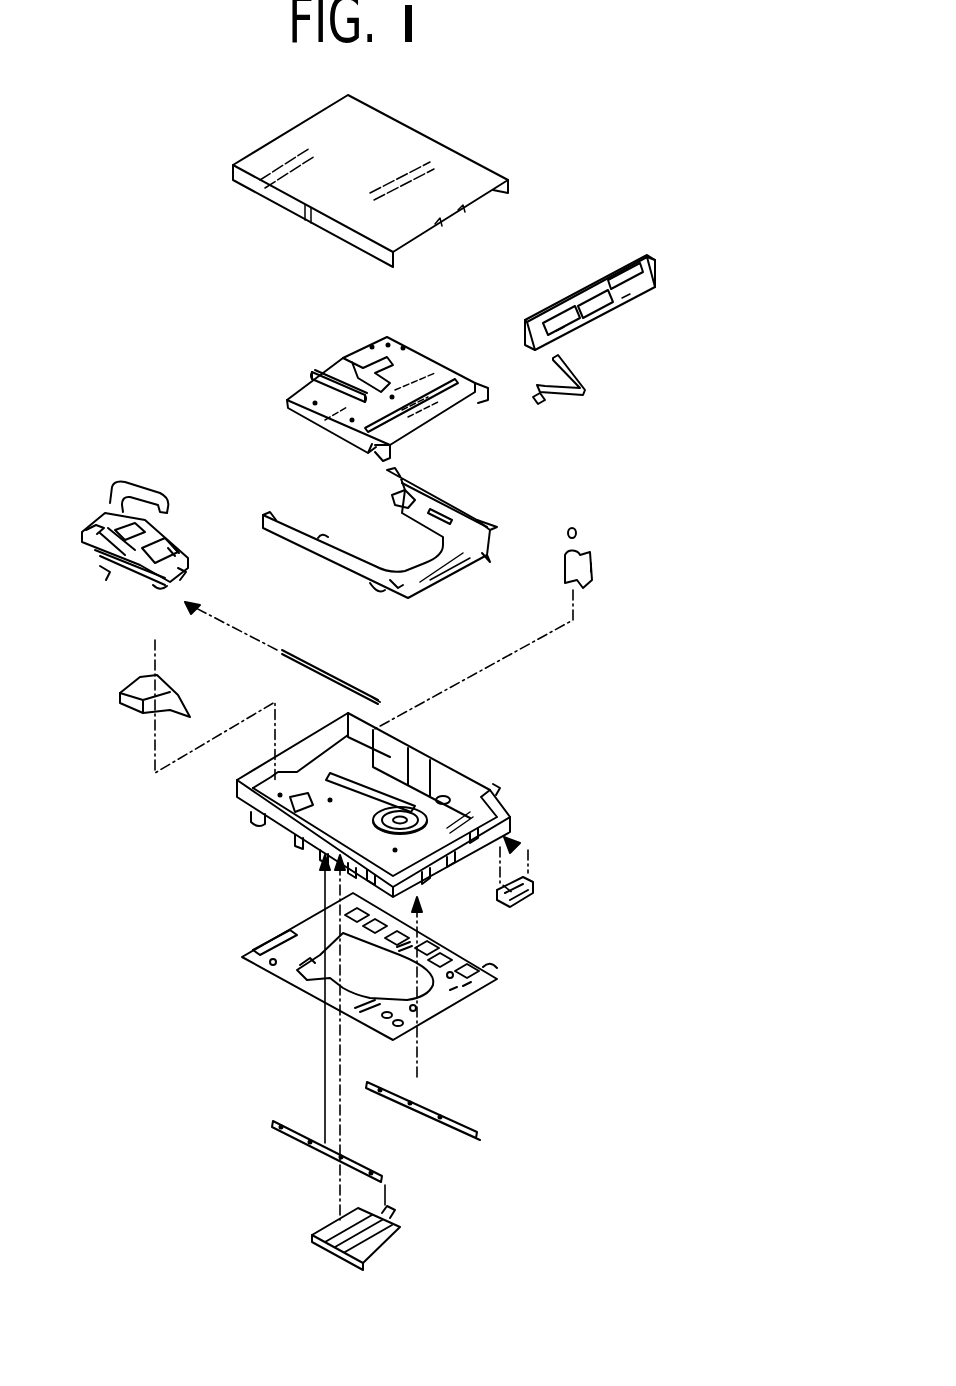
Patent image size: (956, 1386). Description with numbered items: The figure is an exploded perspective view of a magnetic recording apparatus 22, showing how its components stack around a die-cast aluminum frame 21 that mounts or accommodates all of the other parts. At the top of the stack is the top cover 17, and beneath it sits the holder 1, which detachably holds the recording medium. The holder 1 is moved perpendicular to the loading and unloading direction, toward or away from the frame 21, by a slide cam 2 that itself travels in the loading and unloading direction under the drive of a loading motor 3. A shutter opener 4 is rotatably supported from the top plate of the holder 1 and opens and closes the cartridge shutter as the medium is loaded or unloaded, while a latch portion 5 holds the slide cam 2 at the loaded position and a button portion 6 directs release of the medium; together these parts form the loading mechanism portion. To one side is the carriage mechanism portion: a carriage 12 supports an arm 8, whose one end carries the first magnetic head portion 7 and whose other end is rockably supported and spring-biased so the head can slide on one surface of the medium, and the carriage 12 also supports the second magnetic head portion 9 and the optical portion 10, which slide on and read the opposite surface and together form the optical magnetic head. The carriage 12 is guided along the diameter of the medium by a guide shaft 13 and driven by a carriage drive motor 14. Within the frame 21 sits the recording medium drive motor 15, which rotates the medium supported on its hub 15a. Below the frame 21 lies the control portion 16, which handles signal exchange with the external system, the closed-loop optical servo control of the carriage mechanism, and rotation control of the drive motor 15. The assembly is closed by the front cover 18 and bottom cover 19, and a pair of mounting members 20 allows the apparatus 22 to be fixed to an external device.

The holder 1 is at (408, 350).
The slide cam 2 is at (462, 504).
The loading motor 3 is at (127, 690).
The shutter opener 4 is at (577, 378).
The latch portion 5 is at (593, 550).
The button portion 6 is at (537, 893).
The first magnetic head portion 7 is at (181, 556).
The arm 8 is at (166, 531).
The second magnetic head portion 9 is at (183, 574).
The optical portion 10 is at (167, 590).
The carriage 12 is at (108, 575).
The guide shaft 13 is at (323, 668).
The carriage drive motor 14 is at (104, 522).
The recording medium drive motor 15 is at (373, 805).
The hub 15a is at (400, 812).
The control portion 16 is at (494, 968).
The top cover 17 is at (450, 148).
The front cover 18 is at (660, 275).
The bottom cover 19 is at (388, 1237).
The mounting member 20 is at (298, 1141).
The die-cast aluminum frame 21 is at (495, 788).
The magnetic recording apparatus 22 is at (565, 1085).